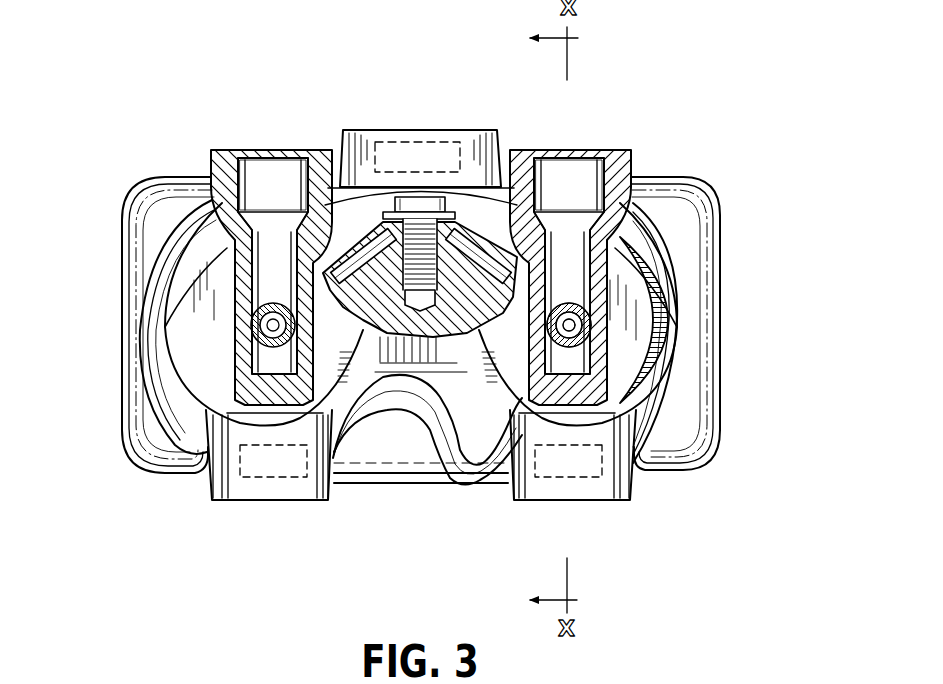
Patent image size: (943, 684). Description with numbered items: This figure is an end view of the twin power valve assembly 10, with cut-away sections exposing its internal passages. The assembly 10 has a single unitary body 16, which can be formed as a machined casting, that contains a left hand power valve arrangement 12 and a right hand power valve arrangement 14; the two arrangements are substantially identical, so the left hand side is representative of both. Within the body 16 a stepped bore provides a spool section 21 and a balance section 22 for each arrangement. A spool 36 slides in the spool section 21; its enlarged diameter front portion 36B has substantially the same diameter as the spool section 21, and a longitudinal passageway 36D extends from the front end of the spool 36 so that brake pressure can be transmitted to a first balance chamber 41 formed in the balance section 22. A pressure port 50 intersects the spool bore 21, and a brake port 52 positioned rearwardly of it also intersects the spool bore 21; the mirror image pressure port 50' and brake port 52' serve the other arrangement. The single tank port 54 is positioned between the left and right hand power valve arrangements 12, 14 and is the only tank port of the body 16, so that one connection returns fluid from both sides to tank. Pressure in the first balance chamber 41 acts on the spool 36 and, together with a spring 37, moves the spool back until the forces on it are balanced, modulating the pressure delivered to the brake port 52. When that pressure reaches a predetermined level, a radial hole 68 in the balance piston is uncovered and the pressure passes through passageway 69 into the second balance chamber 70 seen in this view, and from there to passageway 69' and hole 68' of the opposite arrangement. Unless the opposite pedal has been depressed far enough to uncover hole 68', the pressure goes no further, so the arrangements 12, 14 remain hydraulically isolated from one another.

The twin power valve assembly 10 is at (105, 76).
The left hand power valve arrangement 12 is at (740, 190).
The right hand power valve arrangement 14 is at (106, 190).
The body 16 is at (726, 262).
The spool section 21 is at (600, 325).
The balance section 22 is at (497, 300).
The spool 36 is at (566, 294).
The enlarged diameter front portion 36B is at (598, 288).
The longitudinal passageway 36D is at (586, 345).
The spring 37 is at (592, 373).
The first balance chamber 41 is at (478, 484).
The pressure port 50 is at (570, 258).
The post 50' is at (271, 258).
The brake port 52 is at (573, 480).
The leg 52' is at (269, 480).
The tank port 54 is at (417, 130).
The radial hole 68 is at (569, 202).
The hole 68' is at (273, 202).
The passageway 69 is at (496, 191).
The passageway 69' is at (356, 186).
The second balance chamber 70 is at (473, 262).